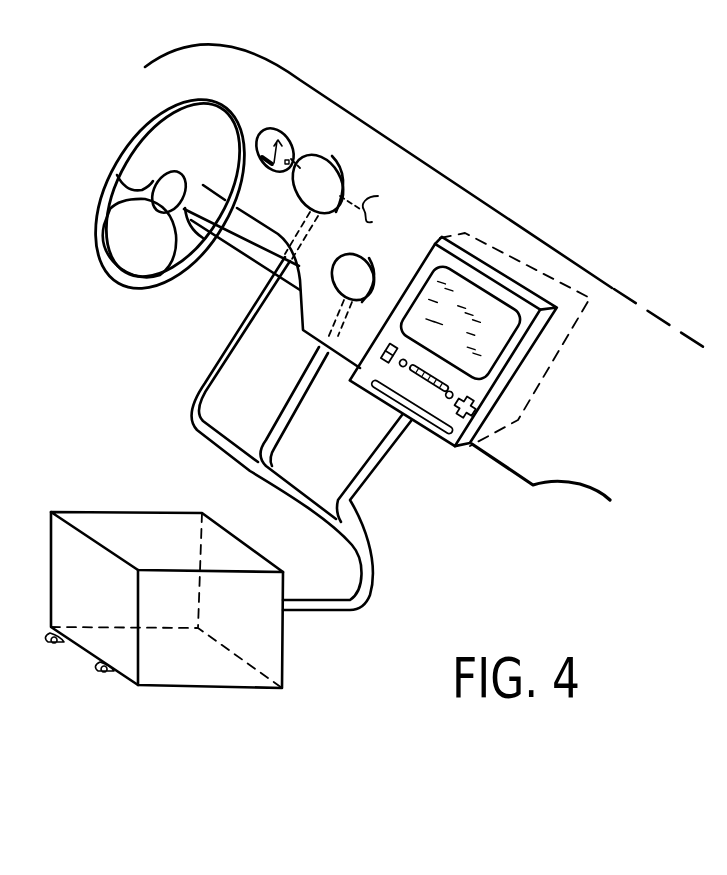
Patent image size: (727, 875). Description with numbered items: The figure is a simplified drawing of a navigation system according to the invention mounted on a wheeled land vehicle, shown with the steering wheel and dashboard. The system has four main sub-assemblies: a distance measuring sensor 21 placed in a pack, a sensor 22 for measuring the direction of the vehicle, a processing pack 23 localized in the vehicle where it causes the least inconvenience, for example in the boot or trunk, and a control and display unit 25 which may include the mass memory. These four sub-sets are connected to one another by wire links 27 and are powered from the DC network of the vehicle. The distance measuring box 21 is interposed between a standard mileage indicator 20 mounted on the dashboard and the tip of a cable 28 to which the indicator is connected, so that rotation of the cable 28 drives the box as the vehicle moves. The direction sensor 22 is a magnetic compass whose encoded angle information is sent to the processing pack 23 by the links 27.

The mileage indicator 20 is at (272, 130).
The distance measuring sensor 21 is at (344, 158).
The direction sensor 22 is at (357, 265).
The processing pack 23 is at (130, 520).
The control and display unit 25 is at (527, 383).
The wire links 27 is at (375, 560).
The cable 28 is at (378, 196).